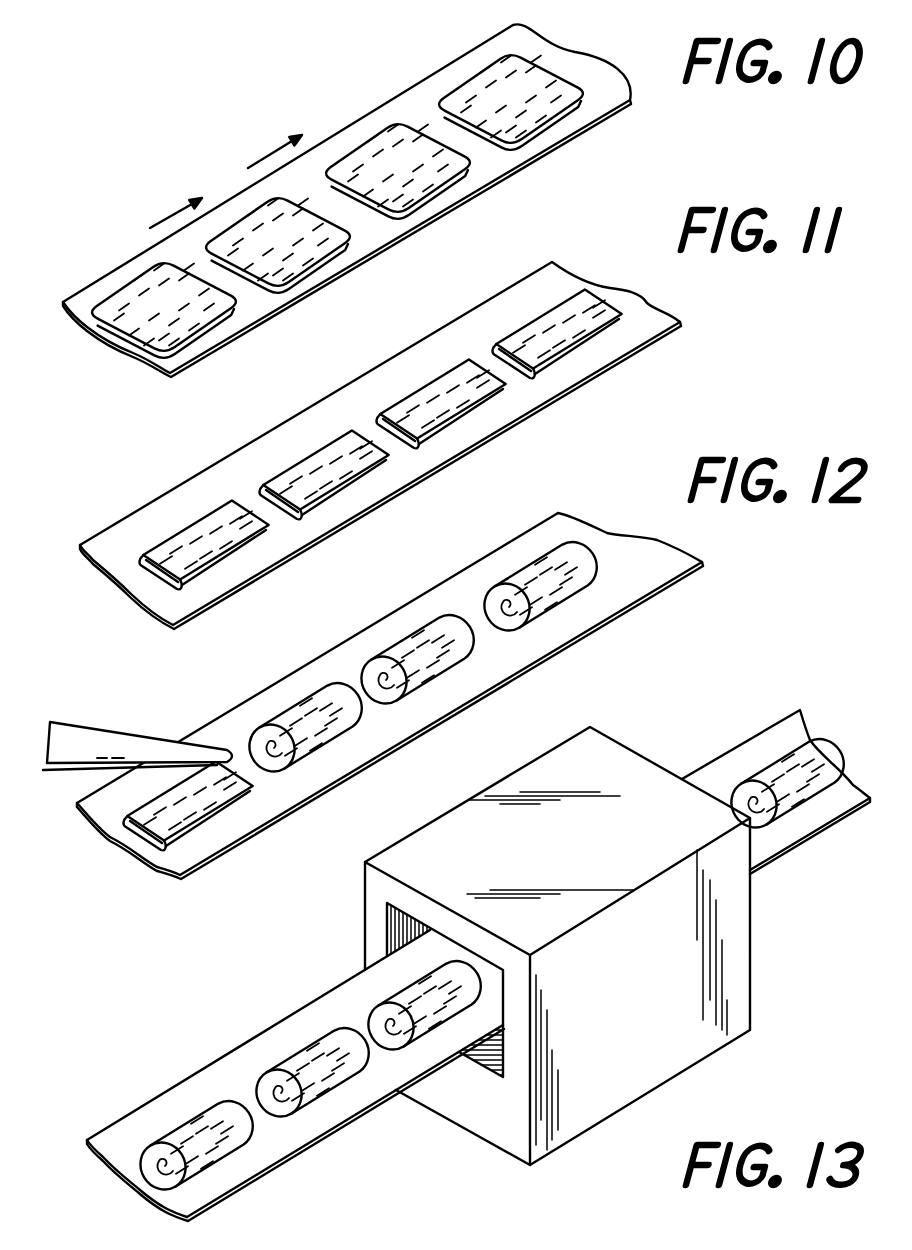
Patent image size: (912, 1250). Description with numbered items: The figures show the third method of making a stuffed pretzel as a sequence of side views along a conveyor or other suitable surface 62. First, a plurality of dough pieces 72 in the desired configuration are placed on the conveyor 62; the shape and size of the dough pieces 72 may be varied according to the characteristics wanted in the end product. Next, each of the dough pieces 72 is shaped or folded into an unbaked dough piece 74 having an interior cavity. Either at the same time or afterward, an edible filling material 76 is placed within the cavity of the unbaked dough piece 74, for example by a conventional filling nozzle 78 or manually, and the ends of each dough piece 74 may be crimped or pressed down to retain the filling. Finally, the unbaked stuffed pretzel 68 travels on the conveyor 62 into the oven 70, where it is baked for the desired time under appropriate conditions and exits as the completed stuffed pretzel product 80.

In FIG. 10, the conveyor 62 is at (90, 288).
In FIG. 11, the conveyor 62 is at (637, 330).
In FIG. 12, the conveyor 62 is at (657, 572).
In FIG. 13, the conveyor 62 is at (788, 830).
In FIG. 13, the unbaked stuffed pretzel 68 is at (205, 1115).
In FIG. 13, the oven 70 is at (636, 1002).
In FIG. 10, the dough pieces 72 is at (238, 220).
In FIG. 11, the unbaked dough piece 74 is at (293, 468).
In FIG. 12, the edible filling material 76 is at (365, 668).
In FIG. 12, the filling nozzle 78 is at (177, 747).
In FIG. 13, the stuffed pretzel product 80 is at (787, 768).